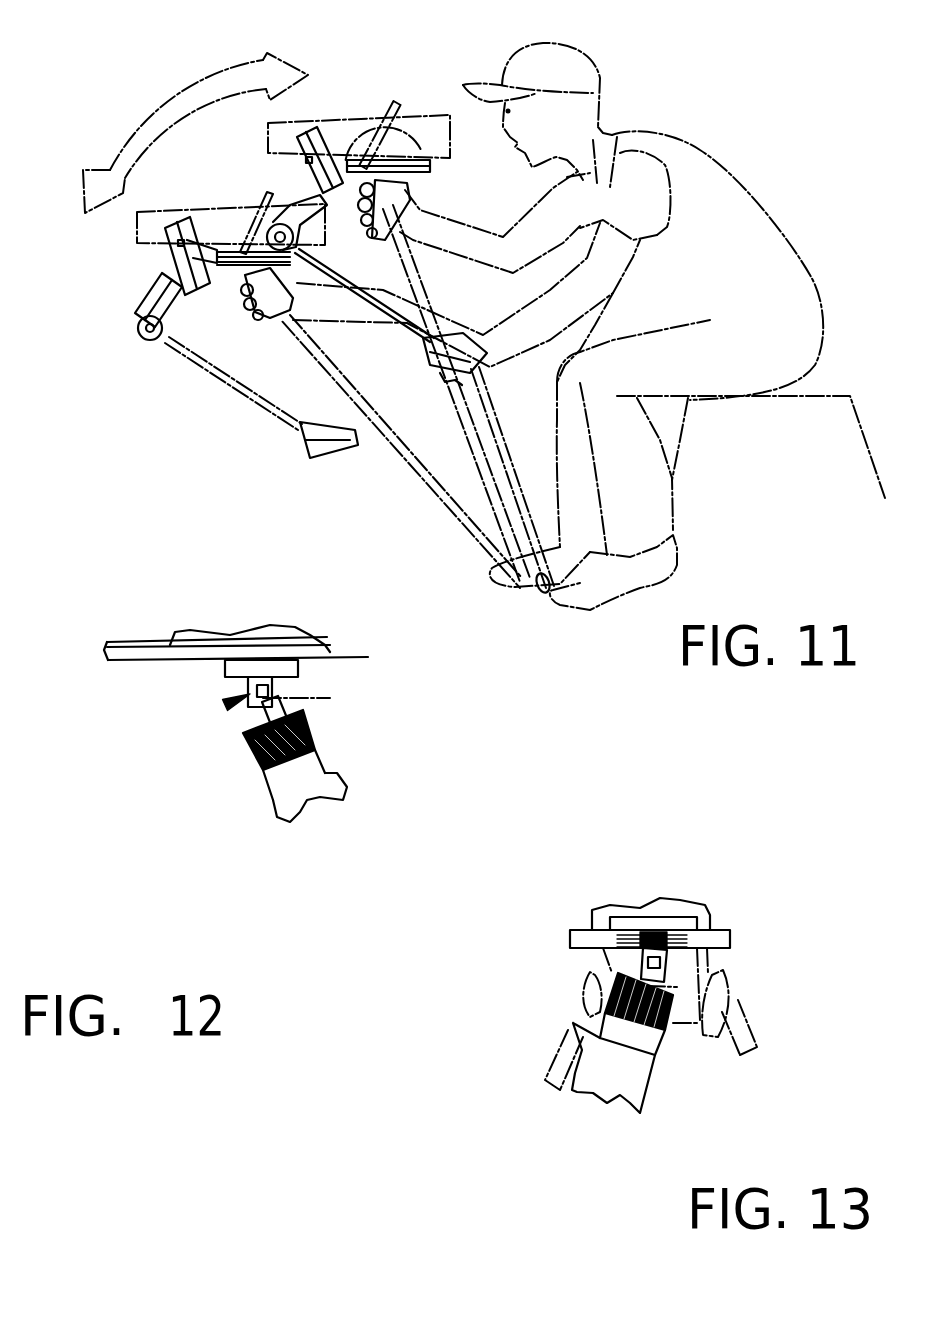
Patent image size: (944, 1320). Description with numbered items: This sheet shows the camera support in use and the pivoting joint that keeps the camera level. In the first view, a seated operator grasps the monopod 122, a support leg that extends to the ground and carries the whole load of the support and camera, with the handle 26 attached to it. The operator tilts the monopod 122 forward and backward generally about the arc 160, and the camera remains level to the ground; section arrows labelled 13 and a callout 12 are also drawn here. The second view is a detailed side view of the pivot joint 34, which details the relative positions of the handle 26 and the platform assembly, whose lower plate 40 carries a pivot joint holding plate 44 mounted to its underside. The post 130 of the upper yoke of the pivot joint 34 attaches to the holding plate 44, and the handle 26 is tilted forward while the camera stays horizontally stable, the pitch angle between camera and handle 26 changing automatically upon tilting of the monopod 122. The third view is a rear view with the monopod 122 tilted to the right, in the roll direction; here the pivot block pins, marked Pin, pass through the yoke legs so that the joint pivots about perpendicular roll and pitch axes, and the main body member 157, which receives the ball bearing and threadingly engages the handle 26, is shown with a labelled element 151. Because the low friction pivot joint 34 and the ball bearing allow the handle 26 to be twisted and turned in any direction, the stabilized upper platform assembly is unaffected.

In FIG. 11, the arc 160 is at (165, 103).
In FIG. 11, the section line 13- 13 is at (475, 64).
In FIG. 11, the handle 12 is at (418, 172).
In FIG. 11, the handle 26 is at (283, 330).
In FIG. 12, the handle 26 is at (282, 817).
In FIG. 13, the handle 26 is at (600, 1073).
In FIG. 11, the monopod 122 is at (493, 463).
In FIG. 12, the lower plate 40 is at (127, 650).
In FIG. 12, the pivot joint holding plate 44 is at (282, 665).
In FIG. 13, the pivot joint holding plate 44 is at (580, 938).
In FIG. 12, the pivot joint 34 is at (230, 703).
In FIG. 13, the pivot joint 34 is at (615, 957).
In FIG. 12, the cylinder 151 is at (247, 757).
In FIG. 13, the cylinder 151 is at (667, 1027).
In FIG. 12, the main body member 157 is at (277, 780).
In FIG. 13, the main body member 157 is at (588, 1018).
In FIG. 13, the upper post 130 is at (660, 937).
In FIG. 13, the pin Pin is at (672, 951).